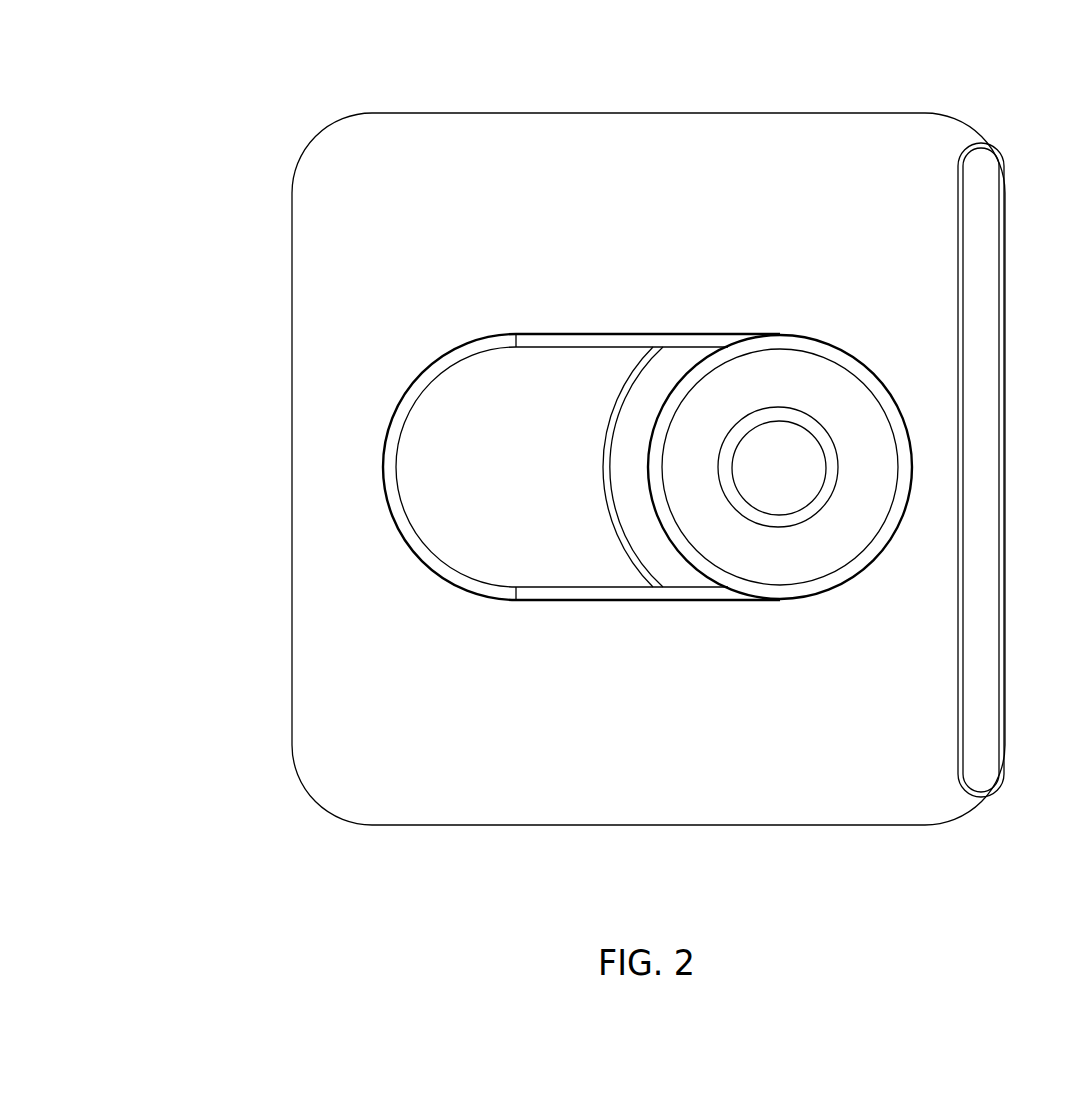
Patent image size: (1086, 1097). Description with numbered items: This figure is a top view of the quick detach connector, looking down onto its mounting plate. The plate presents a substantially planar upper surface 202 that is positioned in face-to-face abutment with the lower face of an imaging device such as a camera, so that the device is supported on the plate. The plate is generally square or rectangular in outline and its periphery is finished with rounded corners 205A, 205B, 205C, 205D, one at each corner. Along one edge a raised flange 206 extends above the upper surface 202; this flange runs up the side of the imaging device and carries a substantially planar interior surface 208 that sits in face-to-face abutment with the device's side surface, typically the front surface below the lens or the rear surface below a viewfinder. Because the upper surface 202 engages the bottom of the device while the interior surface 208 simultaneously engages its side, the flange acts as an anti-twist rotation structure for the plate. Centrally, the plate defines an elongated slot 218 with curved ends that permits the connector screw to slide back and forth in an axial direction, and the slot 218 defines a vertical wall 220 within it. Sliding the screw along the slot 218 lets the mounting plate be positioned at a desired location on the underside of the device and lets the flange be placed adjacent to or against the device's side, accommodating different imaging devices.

The upper surface 202 is at (663, 739).
The rounded corner 205A is at (969, 806).
The rounded corner 205B is at (306, 797).
The rounded corner 205C is at (320, 126).
The rounded corner 205D is at (972, 131).
The raised flange 206 is at (978, 289).
The interior surface 208 is at (952, 252).
The slot 218 is at (464, 473).
The vertical wall 220 is at (600, 352).